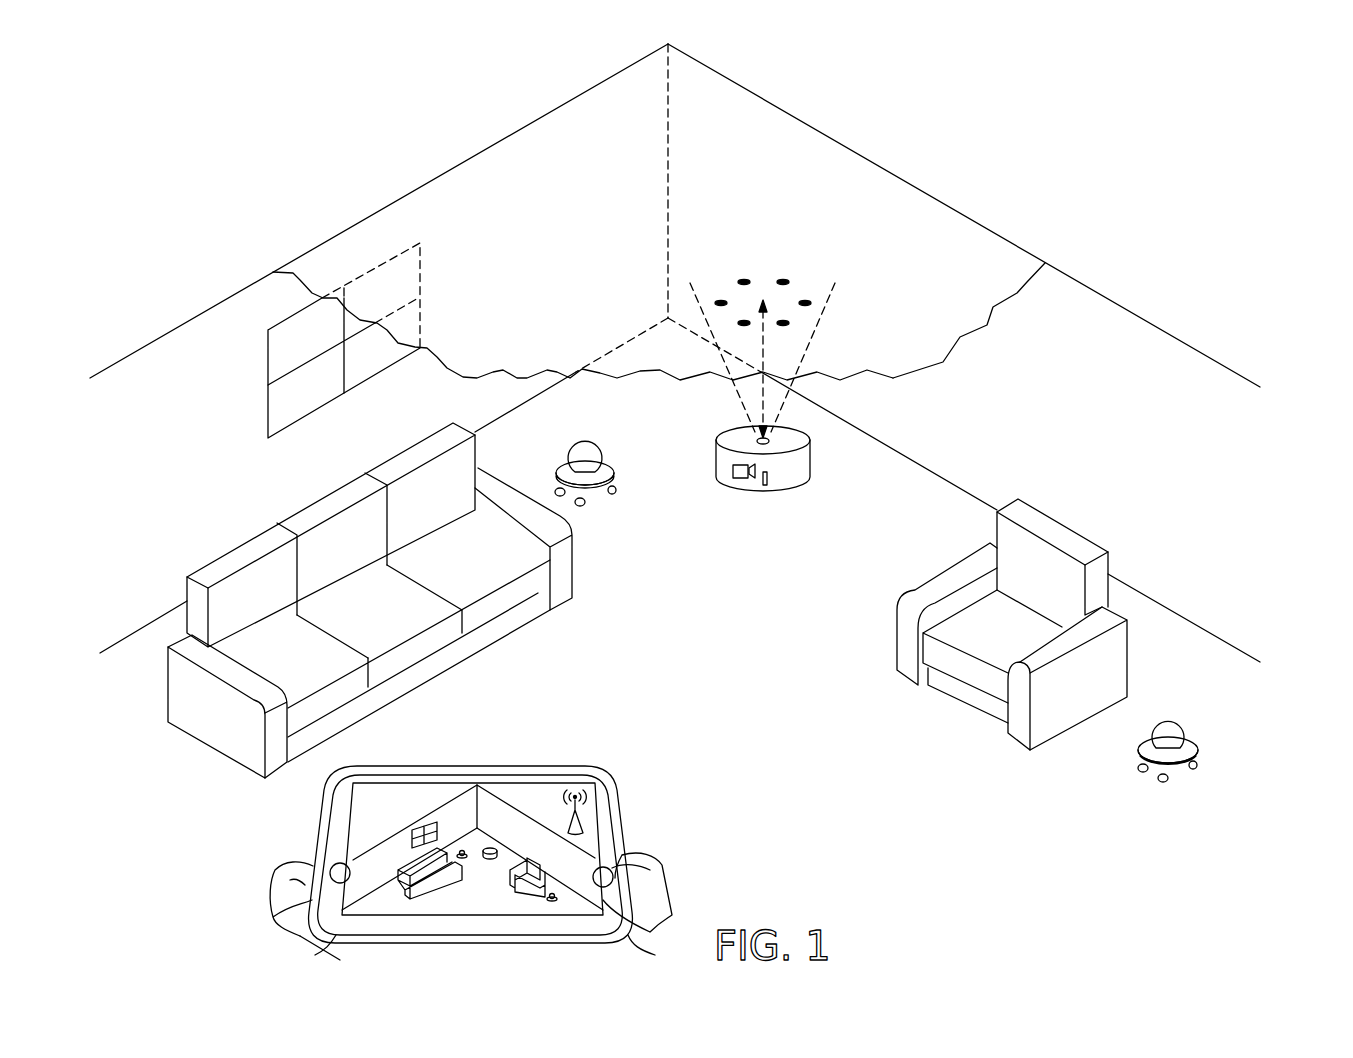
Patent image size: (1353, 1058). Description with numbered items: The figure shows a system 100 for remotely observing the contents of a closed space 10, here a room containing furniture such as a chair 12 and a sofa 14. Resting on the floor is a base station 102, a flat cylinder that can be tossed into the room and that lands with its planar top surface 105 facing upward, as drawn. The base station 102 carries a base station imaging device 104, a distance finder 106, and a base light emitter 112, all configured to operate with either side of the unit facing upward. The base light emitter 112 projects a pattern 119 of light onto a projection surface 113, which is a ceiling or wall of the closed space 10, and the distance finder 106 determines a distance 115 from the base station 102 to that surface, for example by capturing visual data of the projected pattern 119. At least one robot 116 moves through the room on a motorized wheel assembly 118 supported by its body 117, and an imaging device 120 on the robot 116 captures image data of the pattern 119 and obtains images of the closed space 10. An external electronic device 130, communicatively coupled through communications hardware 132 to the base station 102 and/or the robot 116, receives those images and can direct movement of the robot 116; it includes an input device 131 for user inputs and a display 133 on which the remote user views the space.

The system 100 is at (1140, 197).
The closed space 10 is at (488, 210).
The chair 12 is at (897, 640).
The sofa 14 is at (578, 565).
The base station 102 is at (724, 432).
The base station imaging device 104 is at (733, 470).
The planar top surface 105 is at (730, 446).
The distance finder 106 is at (765, 488).
The base light emitter 112 is at (797, 437).
The projection surface 113 is at (877, 222).
The distance 115 is at (766, 352).
The robot 116 is at (625, 503).
The body 117 is at (1187, 768).
The motorized wheel assembly 118 is at (1135, 763).
The pattern 119 is at (783, 280).
The imaging device 120 is at (1167, 720).
The external electronic device 130 is at (625, 838).
The input device 131 is at (528, 797).
The communications hardware 132 is at (583, 820).
The display 133 is at (395, 797).